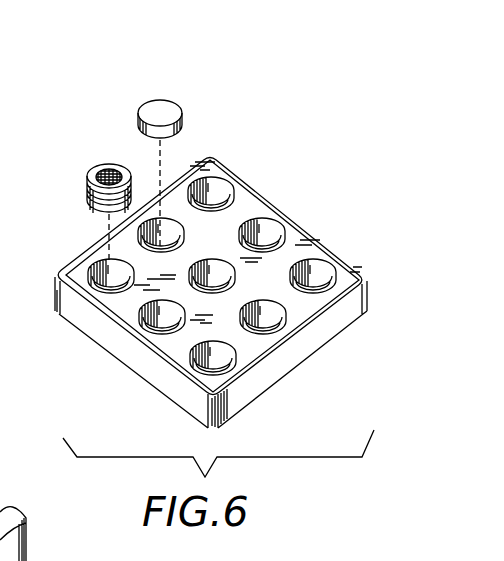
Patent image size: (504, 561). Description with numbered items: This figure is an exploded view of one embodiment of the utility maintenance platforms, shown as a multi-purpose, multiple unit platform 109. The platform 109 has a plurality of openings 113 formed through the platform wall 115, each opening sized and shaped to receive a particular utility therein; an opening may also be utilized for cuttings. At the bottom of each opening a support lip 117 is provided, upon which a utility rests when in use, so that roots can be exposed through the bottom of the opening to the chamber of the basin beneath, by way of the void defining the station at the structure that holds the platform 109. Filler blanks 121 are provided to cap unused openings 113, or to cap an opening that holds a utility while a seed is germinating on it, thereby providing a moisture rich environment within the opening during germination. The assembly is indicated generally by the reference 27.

The plate assembly 27 is at (303, 72).
The multi-purpose, multiple unit platform 109 is at (317, 244).
The openings 113 is at (93, 264).
The platform wall 115 is at (267, 222).
The support lip 117 is at (147, 225).
The filler blanks 121 is at (167, 109).